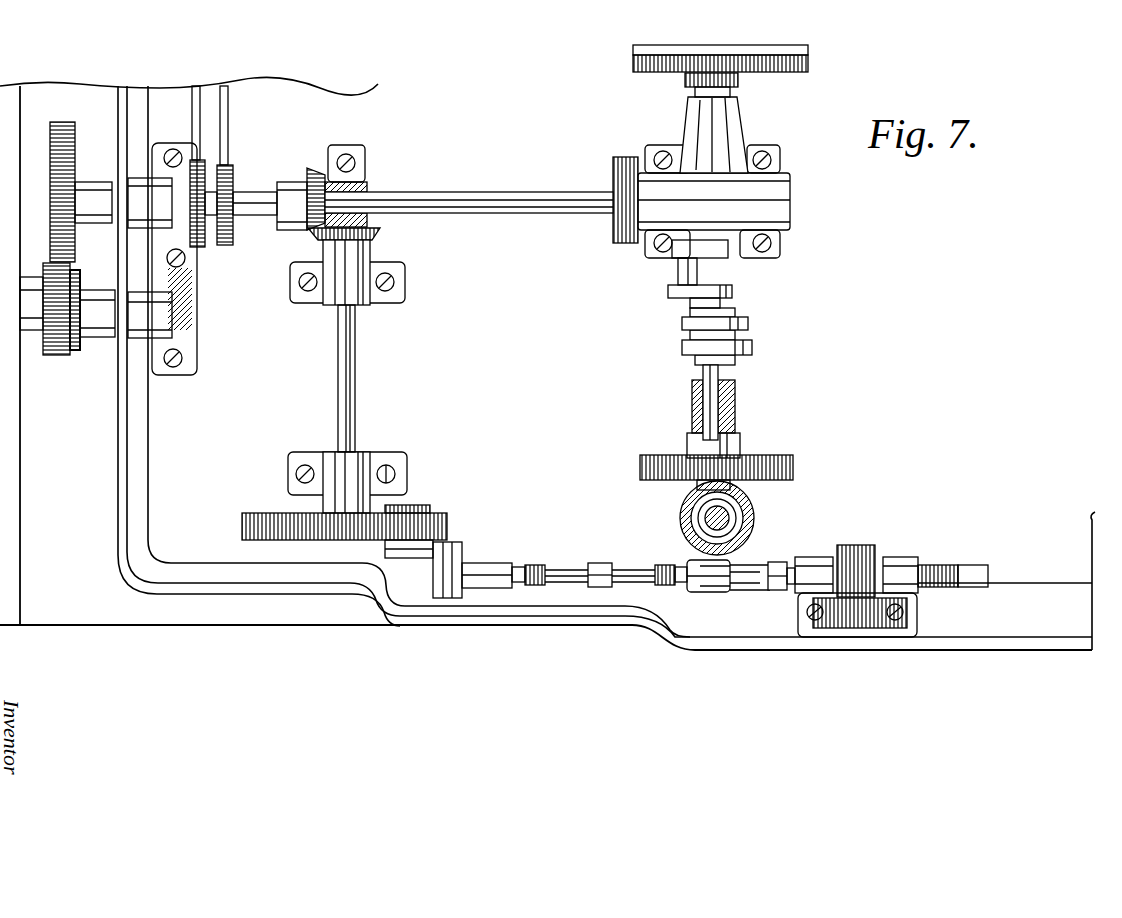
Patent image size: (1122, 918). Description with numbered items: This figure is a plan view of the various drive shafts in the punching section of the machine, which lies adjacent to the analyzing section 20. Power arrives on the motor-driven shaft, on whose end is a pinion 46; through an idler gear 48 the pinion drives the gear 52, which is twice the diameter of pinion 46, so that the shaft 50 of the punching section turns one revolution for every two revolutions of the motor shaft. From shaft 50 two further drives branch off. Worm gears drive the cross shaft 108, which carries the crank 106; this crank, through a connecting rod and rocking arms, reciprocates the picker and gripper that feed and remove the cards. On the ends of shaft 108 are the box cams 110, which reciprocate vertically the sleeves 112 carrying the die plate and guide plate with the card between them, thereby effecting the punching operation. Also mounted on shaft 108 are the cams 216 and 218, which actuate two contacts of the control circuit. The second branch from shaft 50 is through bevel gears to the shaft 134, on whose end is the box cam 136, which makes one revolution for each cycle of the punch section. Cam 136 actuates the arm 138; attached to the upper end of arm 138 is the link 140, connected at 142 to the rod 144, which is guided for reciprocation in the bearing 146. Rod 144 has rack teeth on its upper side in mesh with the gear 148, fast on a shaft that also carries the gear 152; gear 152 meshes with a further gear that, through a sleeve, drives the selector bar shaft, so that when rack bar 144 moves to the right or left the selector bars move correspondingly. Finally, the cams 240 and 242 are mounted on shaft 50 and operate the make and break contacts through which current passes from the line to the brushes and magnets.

The analyzing section 20 is at (18, 526).
The pinion 46 is at (45, 338).
The idler gear 48 is at (73, 338).
The shaft 50 is at (470, 200).
The gear 52 is at (75, 157).
The crank 106 is at (683, 268).
The cross shaft 108 is at (720, 374).
The box cams 110 is at (768, 70).
The sleeves 112 is at (747, 517).
The shaft 134 is at (355, 408).
The box cam 136 is at (263, 517).
The arm 138 is at (404, 558).
The link 140 is at (563, 574).
The connection 142 is at (755, 590).
The rod 144 is at (978, 571).
The bearing 146 is at (900, 562).
The gear 148 is at (873, 570).
The gear 152 is at (862, 602).
The cam 216 is at (748, 322).
The cam 218 is at (755, 346).
The cam 240 is at (200, 247).
The cam 242 is at (232, 246).